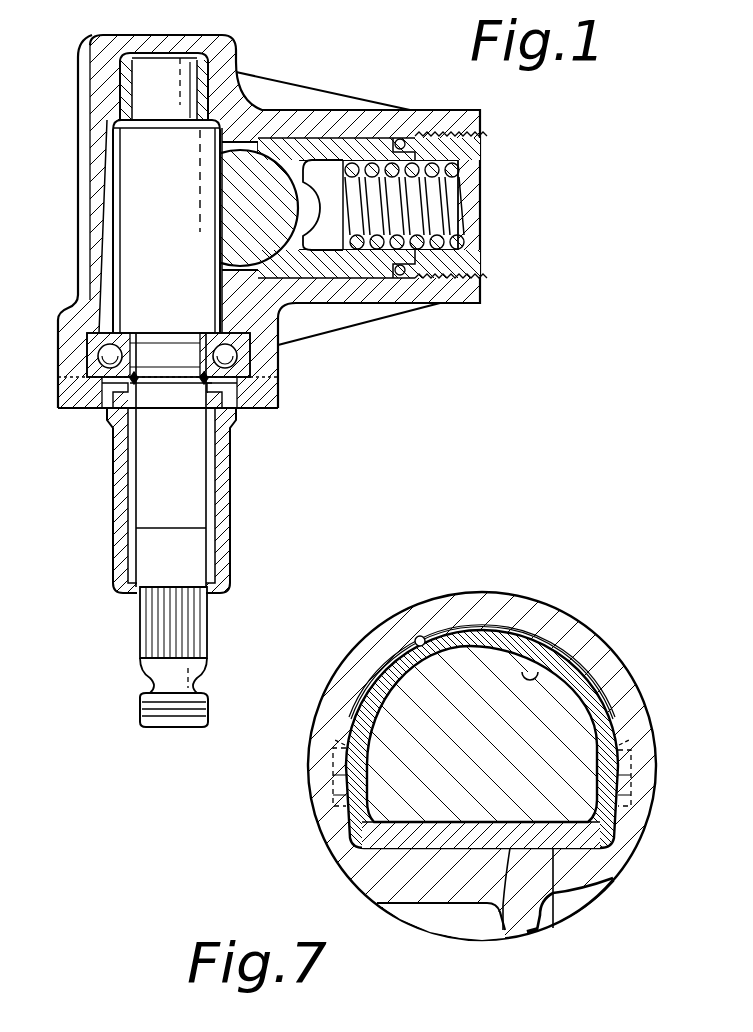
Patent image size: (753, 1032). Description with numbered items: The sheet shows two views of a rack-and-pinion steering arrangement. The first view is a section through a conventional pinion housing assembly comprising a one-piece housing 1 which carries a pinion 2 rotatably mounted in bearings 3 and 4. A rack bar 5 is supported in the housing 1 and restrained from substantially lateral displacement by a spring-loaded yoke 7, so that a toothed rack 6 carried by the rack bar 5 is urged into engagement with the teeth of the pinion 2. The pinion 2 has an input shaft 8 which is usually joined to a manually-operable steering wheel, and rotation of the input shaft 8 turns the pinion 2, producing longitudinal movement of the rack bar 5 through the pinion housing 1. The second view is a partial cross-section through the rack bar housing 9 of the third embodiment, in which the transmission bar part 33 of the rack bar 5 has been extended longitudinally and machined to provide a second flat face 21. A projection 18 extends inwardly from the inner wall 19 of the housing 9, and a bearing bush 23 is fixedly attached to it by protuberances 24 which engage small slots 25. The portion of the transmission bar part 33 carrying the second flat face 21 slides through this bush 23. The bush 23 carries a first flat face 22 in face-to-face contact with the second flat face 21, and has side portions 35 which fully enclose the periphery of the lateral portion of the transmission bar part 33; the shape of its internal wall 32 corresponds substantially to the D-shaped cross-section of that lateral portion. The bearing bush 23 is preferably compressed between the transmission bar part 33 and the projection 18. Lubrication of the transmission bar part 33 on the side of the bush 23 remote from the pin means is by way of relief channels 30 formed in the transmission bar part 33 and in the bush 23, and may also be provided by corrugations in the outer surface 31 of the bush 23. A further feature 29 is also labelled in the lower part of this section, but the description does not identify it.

In FIG. 1, the housing 1 is at (100, 97).
In FIG. 1, the pinion 2 is at (137, 220).
In FIG. 1, the bearing 3 is at (120, 85).
In FIG. 1, the bearing 4 is at (95, 350).
In FIG. 1, the rack bar 5 is at (252, 208).
In FIG. 1, the toothed rack 6 is at (207, 160).
In FIG. 1, the spring-loaded yoke 7 is at (353, 145).
In FIG. 1, the input shaft 8 is at (155, 629).
In FIG. 7, the rack bar housing 9 is at (348, 690).
In FIG. 7, the projection 18 is at (450, 875).
In FIG. 7, the inner wall 19 is at (425, 640).
In FIG. 7, the second flat face 21 is at (372, 904).
In FIG. 7, the first flat face 22 is at (503, 905).
In FIG. 7, the bearing bush 23 is at (397, 672).
In FIG. 7, the protuberances 24 is at (340, 775).
In FIG. 7, the small slots 25 is at (340, 788).
In FIG. 7, the wedge 29 is at (553, 928).
In FIG. 7, the relief channels 30 is at (367, 838).
In FIG. 7, the outer surface 31 is at (343, 740).
In FIG. 7, the internal wall 32 is at (528, 668).
In FIG. 7, the transmission bar part 33 is at (497, 742).
In FIG. 7, the side portions 35 is at (350, 724).